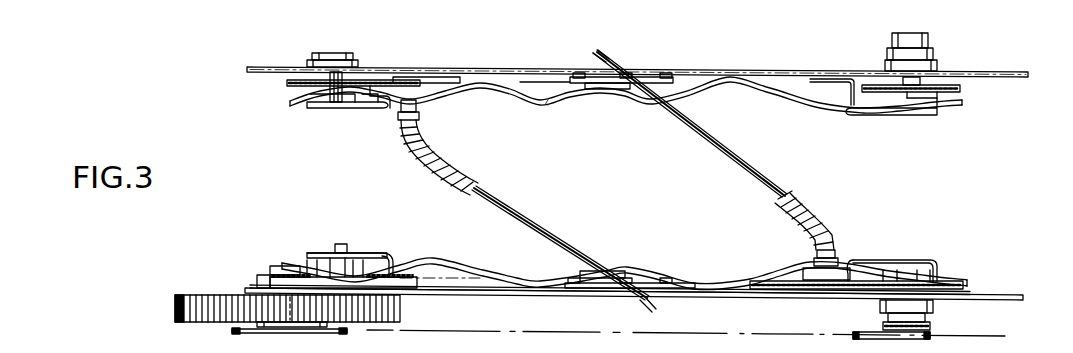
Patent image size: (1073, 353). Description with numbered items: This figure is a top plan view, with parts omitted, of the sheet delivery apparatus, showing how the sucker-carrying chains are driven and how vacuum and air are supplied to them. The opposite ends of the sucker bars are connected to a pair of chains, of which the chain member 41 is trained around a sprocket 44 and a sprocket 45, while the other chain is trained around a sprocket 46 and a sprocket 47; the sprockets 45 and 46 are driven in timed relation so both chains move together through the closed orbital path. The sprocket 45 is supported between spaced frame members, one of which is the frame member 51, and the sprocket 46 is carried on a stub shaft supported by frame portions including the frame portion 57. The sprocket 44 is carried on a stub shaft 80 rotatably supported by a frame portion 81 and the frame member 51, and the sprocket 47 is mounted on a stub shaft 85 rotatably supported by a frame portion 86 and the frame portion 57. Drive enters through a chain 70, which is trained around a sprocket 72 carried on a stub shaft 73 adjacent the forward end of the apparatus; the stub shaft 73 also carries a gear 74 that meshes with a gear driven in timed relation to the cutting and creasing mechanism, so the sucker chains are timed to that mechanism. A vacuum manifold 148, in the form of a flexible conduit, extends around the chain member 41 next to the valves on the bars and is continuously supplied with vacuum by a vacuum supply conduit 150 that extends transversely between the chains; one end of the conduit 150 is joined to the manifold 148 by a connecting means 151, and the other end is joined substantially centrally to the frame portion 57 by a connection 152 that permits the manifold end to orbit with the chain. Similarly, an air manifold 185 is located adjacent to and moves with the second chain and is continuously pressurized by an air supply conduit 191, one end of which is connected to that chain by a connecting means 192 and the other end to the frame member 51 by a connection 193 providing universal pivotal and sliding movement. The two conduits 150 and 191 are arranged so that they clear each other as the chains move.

The chain member 41 is at (468, 292).
The sprocket 44 is at (270, 258).
The sprocket 45 is at (968, 282).
The sprocket 46 is at (962, 92).
The sprocket 47 is at (290, 82).
The frame member 51 is at (543, 295).
The frame portion 57 is at (722, 70).
The chain 70 is at (466, 334).
The sprocket 72 is at (340, 333).
The stub shaft 73 is at (288, 330).
The gear 74 is at (176, 308).
The stub shaft 80 is at (332, 262).
The frame portion 81 is at (374, 256).
The stub shaft 85 is at (321, 108).
The frame portion 86 is at (382, 108).
The vacuum manifold 148 is at (702, 280).
The vacuum supply conduit 150 is at (733, 157).
The connecting means 151 is at (852, 251).
The connection 152 is at (652, 38).
The air manifold 185 is at (564, 95).
The air supply conduit 191 is at (528, 206).
The connecting means 192 is at (460, 140).
The connection 193 is at (590, 300).